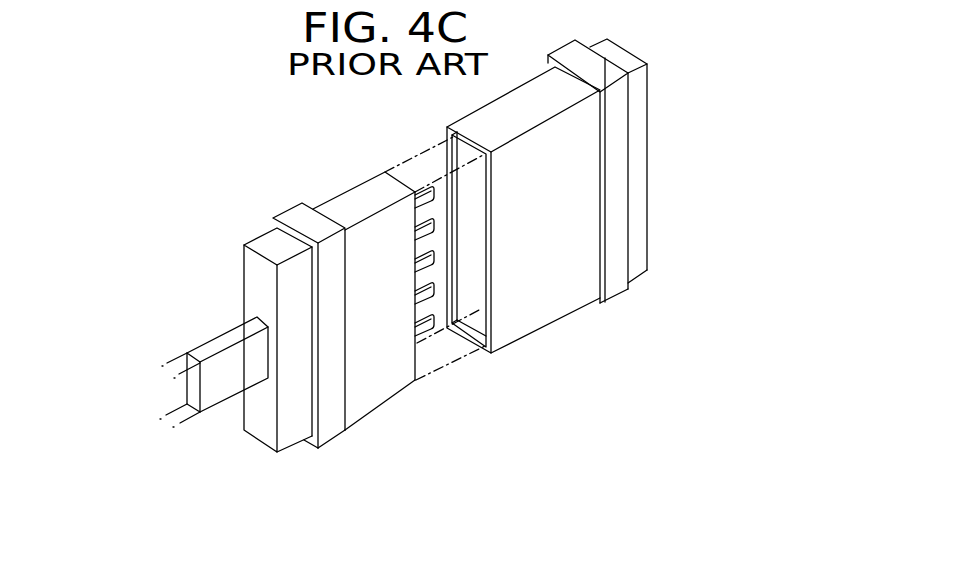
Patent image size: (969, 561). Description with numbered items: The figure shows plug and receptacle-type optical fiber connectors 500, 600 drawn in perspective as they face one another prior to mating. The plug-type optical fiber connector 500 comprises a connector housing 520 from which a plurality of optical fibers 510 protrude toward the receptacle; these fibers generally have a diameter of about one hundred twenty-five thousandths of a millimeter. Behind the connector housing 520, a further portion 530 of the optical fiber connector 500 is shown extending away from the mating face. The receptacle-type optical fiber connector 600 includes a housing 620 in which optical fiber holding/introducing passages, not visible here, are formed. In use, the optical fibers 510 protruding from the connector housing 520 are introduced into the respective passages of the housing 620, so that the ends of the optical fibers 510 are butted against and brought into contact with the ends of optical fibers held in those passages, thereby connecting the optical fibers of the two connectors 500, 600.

The optical fiber connector 500 is at (276, 302).
The optical fibers 510 is at (423, 343).
The connector housing 520 is at (373, 387).
The cable boot 530 is at (227, 362).
The optical fiber connector 600 is at (621, 209).
The housing 620 is at (557, 293).